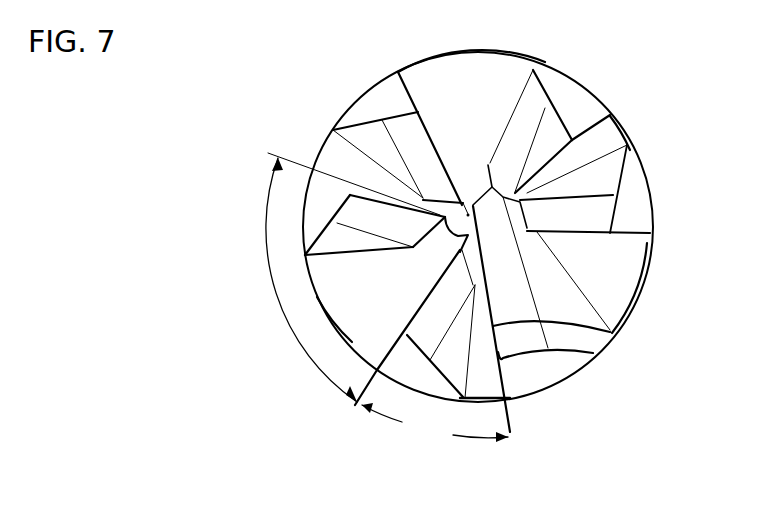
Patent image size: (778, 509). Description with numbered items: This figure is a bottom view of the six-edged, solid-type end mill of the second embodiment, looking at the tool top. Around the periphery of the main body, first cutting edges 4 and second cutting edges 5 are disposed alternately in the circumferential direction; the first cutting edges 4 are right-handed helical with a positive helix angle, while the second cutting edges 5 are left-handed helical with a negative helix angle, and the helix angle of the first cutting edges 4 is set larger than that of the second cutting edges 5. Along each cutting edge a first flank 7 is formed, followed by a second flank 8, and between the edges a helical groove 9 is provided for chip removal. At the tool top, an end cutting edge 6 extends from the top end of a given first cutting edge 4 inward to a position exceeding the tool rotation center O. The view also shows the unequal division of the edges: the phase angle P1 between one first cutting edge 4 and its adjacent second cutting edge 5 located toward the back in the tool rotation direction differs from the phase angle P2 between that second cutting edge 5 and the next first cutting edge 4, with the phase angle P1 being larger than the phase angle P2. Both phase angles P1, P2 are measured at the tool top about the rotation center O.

The first cutting edge 4 is at (397, 71).
The second cutting edge 5 is at (610, 114).
The end cutting edge 6 is at (611, 333).
The first flank 7 is at (612, 114).
The second flank 8 is at (630, 148).
The helical groove 9 is at (522, 360).
The tool rotation center O is at (465, 212).
The phase angle P1 is at (307, 280).
The phase angle P2 is at (435, 427).